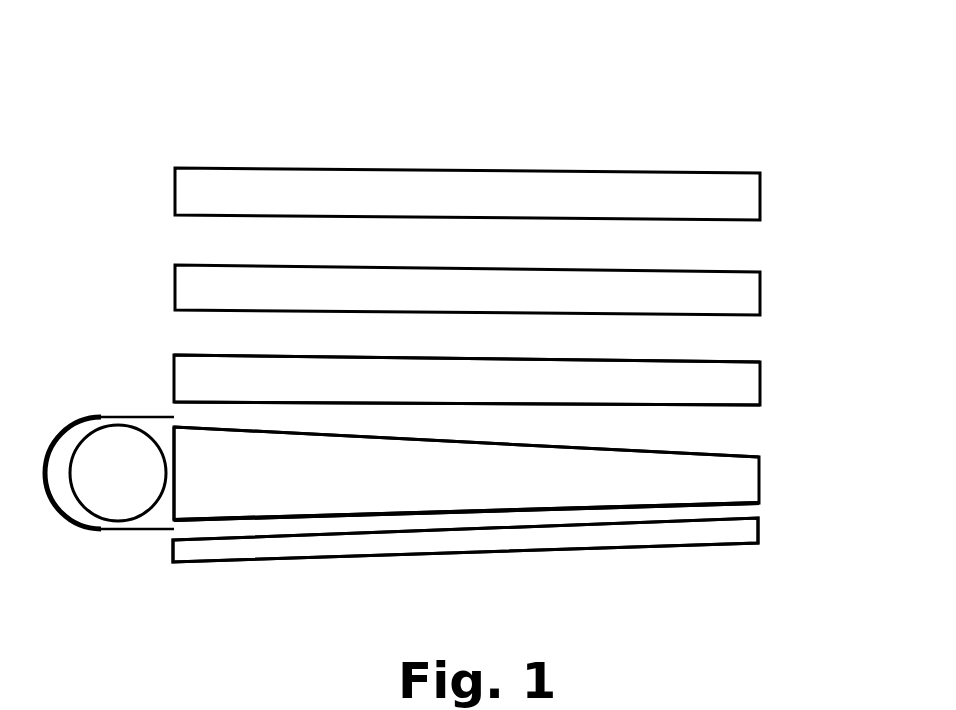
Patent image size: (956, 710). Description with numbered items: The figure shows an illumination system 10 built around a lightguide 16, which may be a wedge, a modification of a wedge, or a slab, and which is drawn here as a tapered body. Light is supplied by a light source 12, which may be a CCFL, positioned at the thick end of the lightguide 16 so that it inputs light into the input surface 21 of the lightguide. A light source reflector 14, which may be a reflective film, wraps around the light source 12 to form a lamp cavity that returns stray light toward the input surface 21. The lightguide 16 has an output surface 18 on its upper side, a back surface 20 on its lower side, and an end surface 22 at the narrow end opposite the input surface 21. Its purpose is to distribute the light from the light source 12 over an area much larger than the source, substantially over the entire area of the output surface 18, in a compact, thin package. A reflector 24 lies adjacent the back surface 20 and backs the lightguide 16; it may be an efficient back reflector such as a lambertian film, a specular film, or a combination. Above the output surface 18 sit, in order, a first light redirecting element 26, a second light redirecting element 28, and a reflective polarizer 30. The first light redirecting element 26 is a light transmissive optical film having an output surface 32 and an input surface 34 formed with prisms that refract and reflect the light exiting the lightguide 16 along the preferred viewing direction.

The illumination system 10 is at (703, 120).
The light source 12 is at (122, 508).
The light source reflector 14 is at (62, 513).
The lightguide 16 is at (562, 490).
The output surface 18 is at (715, 452).
The back surface 20 is at (702, 507).
The input surface 21 is at (173, 510).
The end surface 22 is at (758, 477).
The reflector 24 is at (417, 555).
The first light redirecting element 26 is at (742, 383).
The second light redirecting element 28 is at (742, 293).
The reflective polarizer 30 is at (742, 198).
The output surface 32 is at (720, 361).
The input surface 34 is at (730, 405).